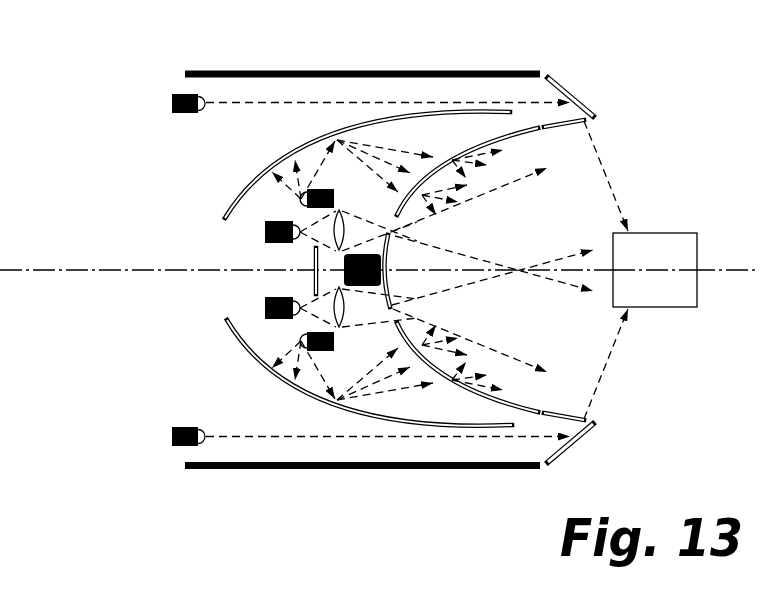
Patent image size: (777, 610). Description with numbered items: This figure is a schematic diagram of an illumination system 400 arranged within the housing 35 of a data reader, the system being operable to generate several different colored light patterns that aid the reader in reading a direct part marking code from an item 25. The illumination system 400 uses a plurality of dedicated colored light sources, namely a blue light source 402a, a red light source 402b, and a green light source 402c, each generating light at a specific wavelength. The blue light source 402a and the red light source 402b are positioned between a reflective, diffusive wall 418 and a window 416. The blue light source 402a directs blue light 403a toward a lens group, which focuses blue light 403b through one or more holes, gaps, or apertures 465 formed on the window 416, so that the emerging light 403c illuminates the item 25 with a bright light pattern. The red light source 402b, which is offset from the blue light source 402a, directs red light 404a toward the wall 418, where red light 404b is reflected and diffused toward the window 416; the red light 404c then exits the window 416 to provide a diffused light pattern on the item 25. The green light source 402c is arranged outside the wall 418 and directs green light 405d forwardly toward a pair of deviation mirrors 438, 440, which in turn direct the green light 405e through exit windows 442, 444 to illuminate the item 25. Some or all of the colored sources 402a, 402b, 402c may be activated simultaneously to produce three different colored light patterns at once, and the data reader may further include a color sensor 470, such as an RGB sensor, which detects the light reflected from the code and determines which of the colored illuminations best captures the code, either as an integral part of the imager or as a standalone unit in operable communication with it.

The illumination system 400 is at (112, 72).
The housing 35 is at (402, 68).
The item 25 is at (673, 231).
The blue light source 402a is at (265, 228).
The red light source 402b is at (302, 329).
The green light source 402c is at (185, 113).
The blue light 403a is at (304, 210).
The focused blue light 403b is at (373, 220).
The blue light pattern 403c is at (491, 257).
The red light 404a is at (318, 368).
The reflected red light 404b is at (363, 378).
The diffused red light 404c is at (414, 330).
The green light 405d is at (275, 103).
The deviated green light 405e is at (599, 157).
The window 416 is at (388, 290).
The wall 418 is at (277, 157).
The deviation mirror 438 is at (568, 95).
The deviation mirror 440 is at (589, 431).
The exit window 442 is at (562, 128).
The exit window 444 is at (562, 413).
The aperture 465 is at (397, 240).
The color sensor 470 is at (314, 260).